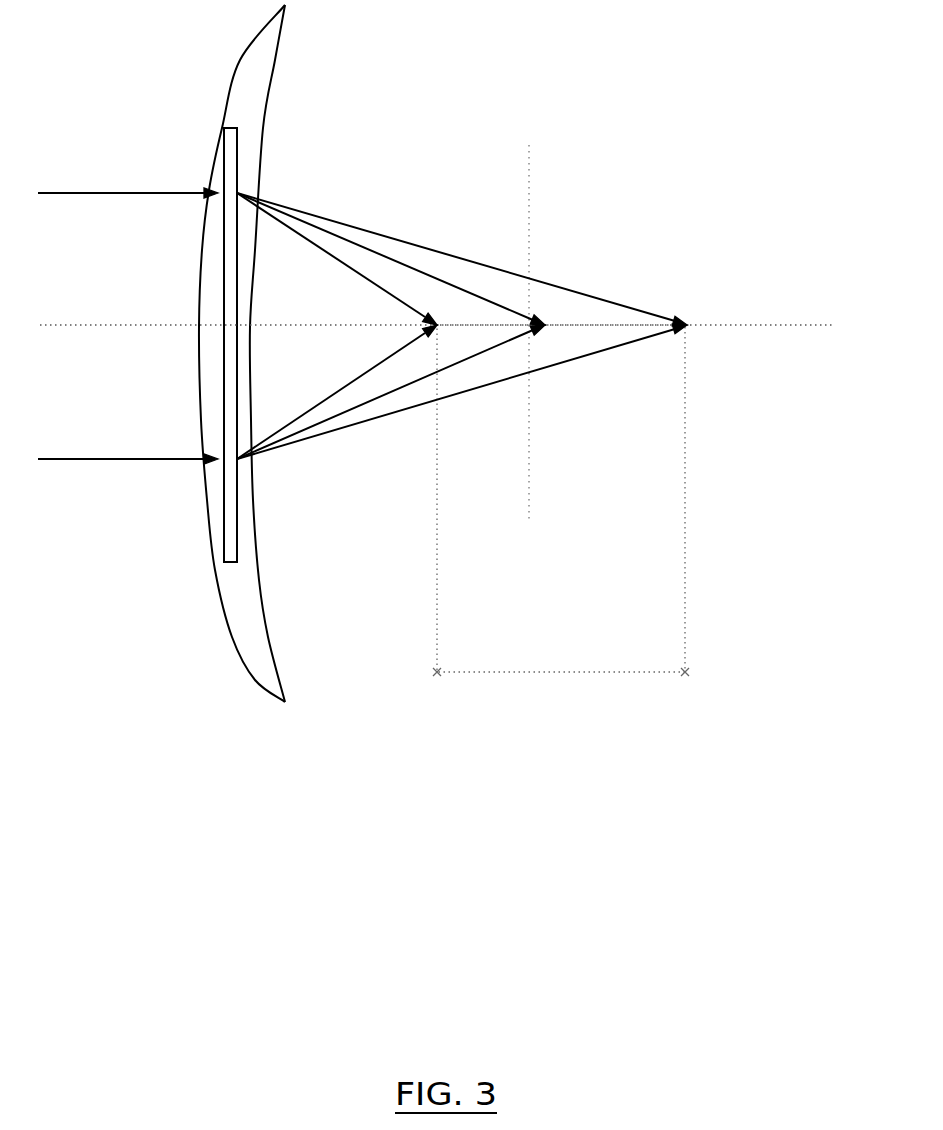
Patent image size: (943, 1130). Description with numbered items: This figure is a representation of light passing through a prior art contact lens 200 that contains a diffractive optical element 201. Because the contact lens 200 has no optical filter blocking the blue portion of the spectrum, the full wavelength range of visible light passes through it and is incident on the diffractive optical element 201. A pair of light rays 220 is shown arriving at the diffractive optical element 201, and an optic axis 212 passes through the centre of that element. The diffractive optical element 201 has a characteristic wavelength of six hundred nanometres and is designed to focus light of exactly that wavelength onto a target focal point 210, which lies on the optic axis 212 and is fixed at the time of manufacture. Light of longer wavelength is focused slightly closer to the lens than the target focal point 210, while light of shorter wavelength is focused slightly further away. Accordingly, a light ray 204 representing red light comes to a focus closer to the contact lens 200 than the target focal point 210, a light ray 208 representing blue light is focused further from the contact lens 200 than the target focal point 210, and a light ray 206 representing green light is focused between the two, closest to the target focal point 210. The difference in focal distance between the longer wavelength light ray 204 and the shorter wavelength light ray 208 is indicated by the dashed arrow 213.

The contact lens 200 is at (232, 637).
The diffractive optical element 201 is at (230, 128).
The light ray 204 is at (373, 282).
The light ray 206 is at (463, 287).
The light ray 208 is at (503, 268).
The target focal point 210 is at (520, 340).
The optic axis 212 is at (743, 322).
The dashed arrow 213 is at (572, 674).
The pair of light rays 220 is at (118, 190).